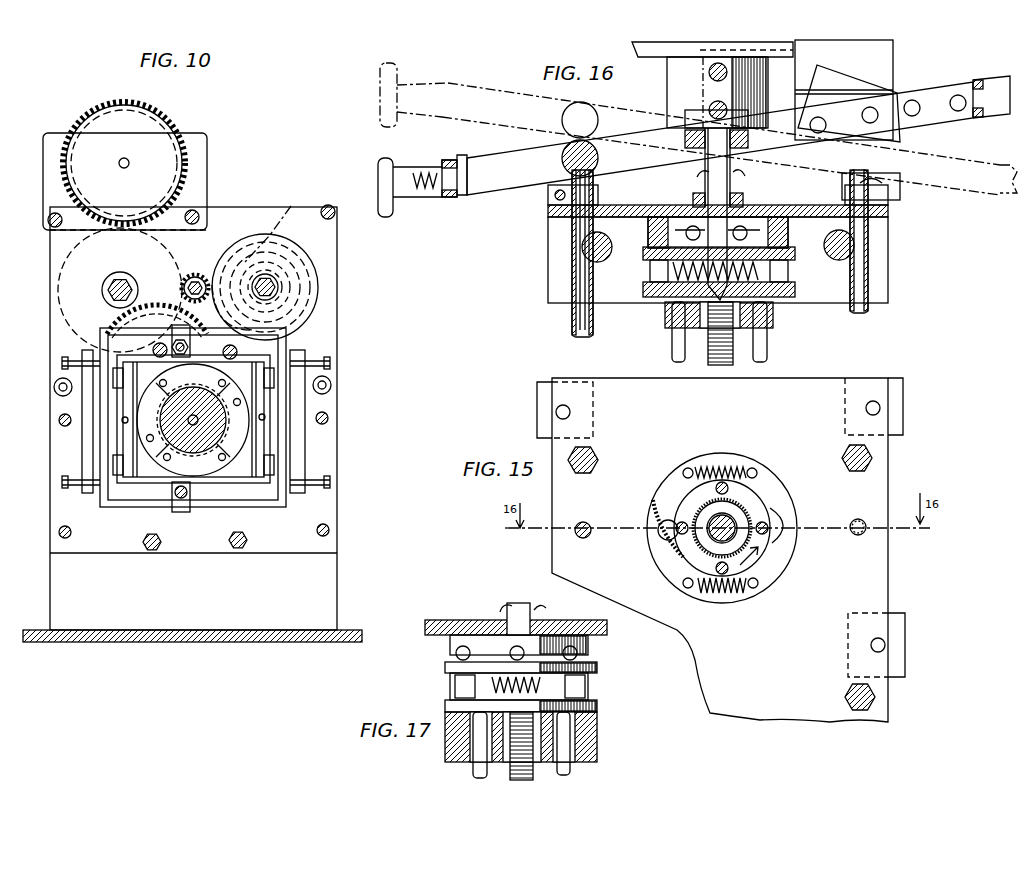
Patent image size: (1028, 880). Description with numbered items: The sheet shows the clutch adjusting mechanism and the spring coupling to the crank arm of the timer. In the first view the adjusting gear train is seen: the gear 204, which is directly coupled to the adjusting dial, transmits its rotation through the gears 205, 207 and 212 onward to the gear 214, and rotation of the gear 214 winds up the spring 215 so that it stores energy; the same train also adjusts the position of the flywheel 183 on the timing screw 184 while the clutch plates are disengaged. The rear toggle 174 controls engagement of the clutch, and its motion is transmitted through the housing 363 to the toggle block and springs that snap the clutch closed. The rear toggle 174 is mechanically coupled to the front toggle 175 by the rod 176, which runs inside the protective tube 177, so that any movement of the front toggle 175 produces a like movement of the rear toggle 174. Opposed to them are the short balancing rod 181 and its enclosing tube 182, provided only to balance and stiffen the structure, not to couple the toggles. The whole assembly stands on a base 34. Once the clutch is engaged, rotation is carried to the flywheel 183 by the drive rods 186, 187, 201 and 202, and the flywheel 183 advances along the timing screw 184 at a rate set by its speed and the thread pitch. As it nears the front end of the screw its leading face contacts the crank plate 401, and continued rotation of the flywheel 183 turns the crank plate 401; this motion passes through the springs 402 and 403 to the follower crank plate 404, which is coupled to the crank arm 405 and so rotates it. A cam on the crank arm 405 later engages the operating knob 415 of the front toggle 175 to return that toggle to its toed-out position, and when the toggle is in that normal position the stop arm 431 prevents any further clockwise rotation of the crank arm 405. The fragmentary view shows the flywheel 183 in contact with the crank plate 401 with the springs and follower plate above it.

In FIG. 10, the gear 204 is at (157, 108).
In FIG. 10, the gear 205 is at (58, 275).
In FIG. 10, the gear 207 is at (206, 274).
In FIG. 10, the gear 212 is at (65, 329).
In FIG. 10, the gear 214 is at (318, 282).
In FIG. 10, the spring 215 is at (291, 206).
In FIG. 10, the rod 176 is at (123, 421).
In FIG. 16, the rod 176 is at (575, 323).
In FIG. 15, the rod 176 is at (584, 521).
In FIG. 10, the balancing rod 181 is at (265, 418).
In FIG. 10, the housing 363 is at (240, 437).
In FIG. 10, the rear toggle 174 is at (147, 483).
In FIG. 10, the base plate 34 is at (97, 644).
In FIG. 16, the crank arm 405 is at (648, 44).
In FIG. 16, the stop arm 431 is at (893, 52).
In FIG. 16, the operating knob 415 is at (422, 190).
In FIG. 16, the front toggle 175 is at (497, 187).
In FIG. 16, the protective tube 177 is at (570, 266).
In FIG. 15, the protective tube 177 is at (575, 540).
In FIG. 16, the enclosing tube 182 is at (868, 282).
In FIG. 15, the enclosing tube 182 is at (868, 535).
In FIG. 16, the spring 402 is at (668, 292).
In FIG. 15, the spring 402 is at (725, 598).
In FIG. 16, the drive rod 187 is at (674, 346).
In FIG. 15, the drive rod 187 is at (676, 540).
In FIG. 17, the drive rod 187 is at (475, 770).
In FIG. 16, the follower crank plate 404 is at (784, 248).
In FIG. 15, the follower crank plate 404 is at (655, 530).
In FIG. 17, the follower crank plate 404 is at (598, 667).
In FIG. 16, the crank plate 401 is at (796, 290).
In FIG. 15, the crank plate 401 is at (775, 575).
In FIG. 17, the crank plate 401 is at (598, 708).
In FIG. 16, the timing screw 184 is at (735, 348).
In FIG. 15, the timing screw 184 is at (735, 525).
In FIG. 17, the timing screw 184 is at (535, 772).
In FIG. 16, the drive rod 186 is at (768, 357).
In FIG. 15, the drive rod 186 is at (770, 527).
In FIG. 17, the drive rod 186 is at (572, 765).
In FIG. 15, the spring 403 is at (722, 468).
In FIG. 15, the drive rod 201 is at (716, 488).
In FIG. 15, the drive rod 202 is at (700, 576).
In FIG. 17, the flywheel 183 is at (598, 745).